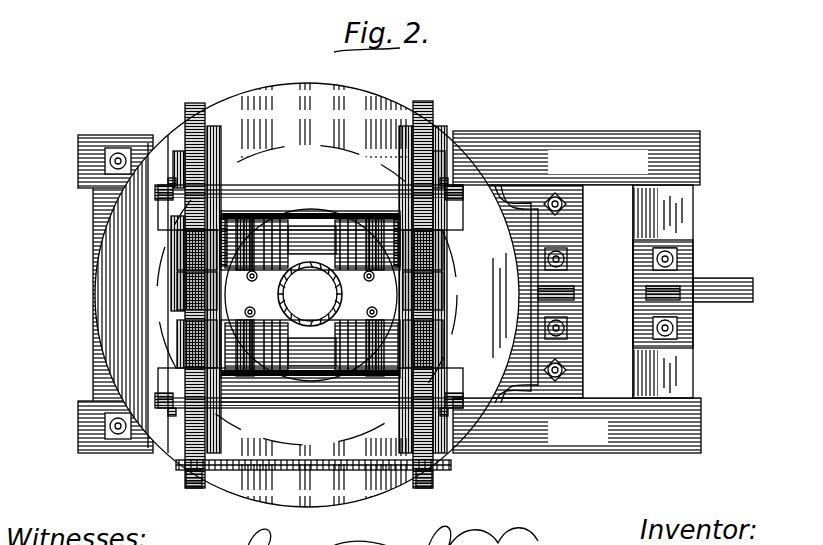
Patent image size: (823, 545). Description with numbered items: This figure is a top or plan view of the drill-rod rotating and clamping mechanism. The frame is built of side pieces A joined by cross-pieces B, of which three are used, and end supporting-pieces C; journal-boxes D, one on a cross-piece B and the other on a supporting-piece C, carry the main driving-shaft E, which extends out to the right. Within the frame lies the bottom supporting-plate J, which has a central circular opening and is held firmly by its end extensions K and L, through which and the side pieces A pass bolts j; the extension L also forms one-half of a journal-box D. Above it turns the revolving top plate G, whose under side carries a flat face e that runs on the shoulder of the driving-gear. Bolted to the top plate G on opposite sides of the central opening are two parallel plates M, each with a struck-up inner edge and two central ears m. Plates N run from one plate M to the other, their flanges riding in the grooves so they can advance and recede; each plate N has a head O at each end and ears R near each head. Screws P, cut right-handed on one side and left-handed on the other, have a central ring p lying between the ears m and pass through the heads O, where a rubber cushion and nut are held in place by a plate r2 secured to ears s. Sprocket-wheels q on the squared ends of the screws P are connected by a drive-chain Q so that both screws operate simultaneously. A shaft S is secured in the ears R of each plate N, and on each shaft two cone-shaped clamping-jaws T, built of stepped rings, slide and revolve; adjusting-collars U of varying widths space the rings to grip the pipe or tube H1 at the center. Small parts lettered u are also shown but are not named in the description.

The plates N is at (300, 182).
The end extension of the bottom plate K is at (88, 198).
The bottom supporting-plate J is at (112, 145).
The heads O is at (310, 296).
The screws P is at (184, 125).
The adjusting-collars U is at (208, 165).
The plate r2 is at (455, 420).
The ears s is at (475, 375).
The ears m is at (170, 268).
The plates M is at (172, 232).
The ring p is at (172, 288).
The shaft S is at (300, 235).
The cone-shaped clamping-jaws T is at (311, 295).
The ears R is at (240, 200).
The pipe or tube H1 is at (310, 294).
The pins u is at (309, 316).
The drive-chain Q is at (328, 463).
The sprocket-wheels q is at (180, 462).
The side pieces of the frame A is at (577, 292).
The revolving top plate G is at (518, 291).
The cross-pieces B is at (560, 180).
The bolts j is at (585, 176).
The end extension of the bottom plate L is at (566, 200).
The flat face e is at (568, 230).
The end supporting-pieces C is at (663, 291).
The journal-boxes D is at (568, 262).
The main driving-shaft E is at (723, 279).